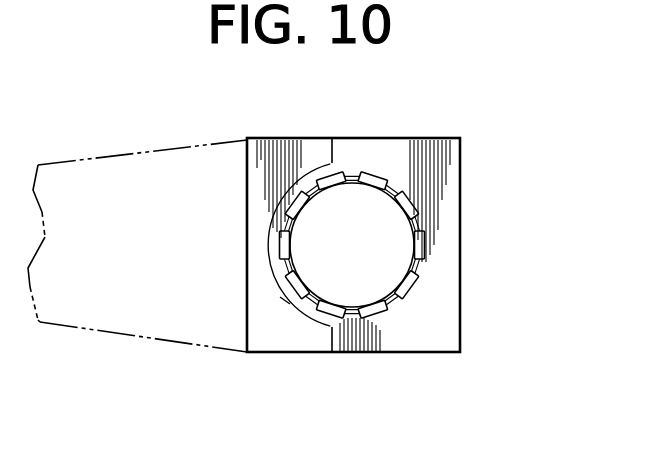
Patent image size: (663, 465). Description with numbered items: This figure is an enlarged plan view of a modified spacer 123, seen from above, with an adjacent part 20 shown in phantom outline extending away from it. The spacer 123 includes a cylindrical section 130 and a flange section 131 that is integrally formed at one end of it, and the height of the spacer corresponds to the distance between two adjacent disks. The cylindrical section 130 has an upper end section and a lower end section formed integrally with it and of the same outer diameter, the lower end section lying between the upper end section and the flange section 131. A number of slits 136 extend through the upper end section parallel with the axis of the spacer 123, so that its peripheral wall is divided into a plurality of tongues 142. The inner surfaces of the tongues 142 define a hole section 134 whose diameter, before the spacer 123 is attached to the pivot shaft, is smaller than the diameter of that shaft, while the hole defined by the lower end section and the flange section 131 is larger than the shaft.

The elongated tool body 20 is at (147, 318).
The spacer 123 is at (460, 175).
The cylindrical section 130 is at (424, 238).
The flange section 131 is at (405, 153).
The hole section 134 is at (405, 205).
The slits 136 is at (388, 302).
The tongues 142 is at (325, 320).